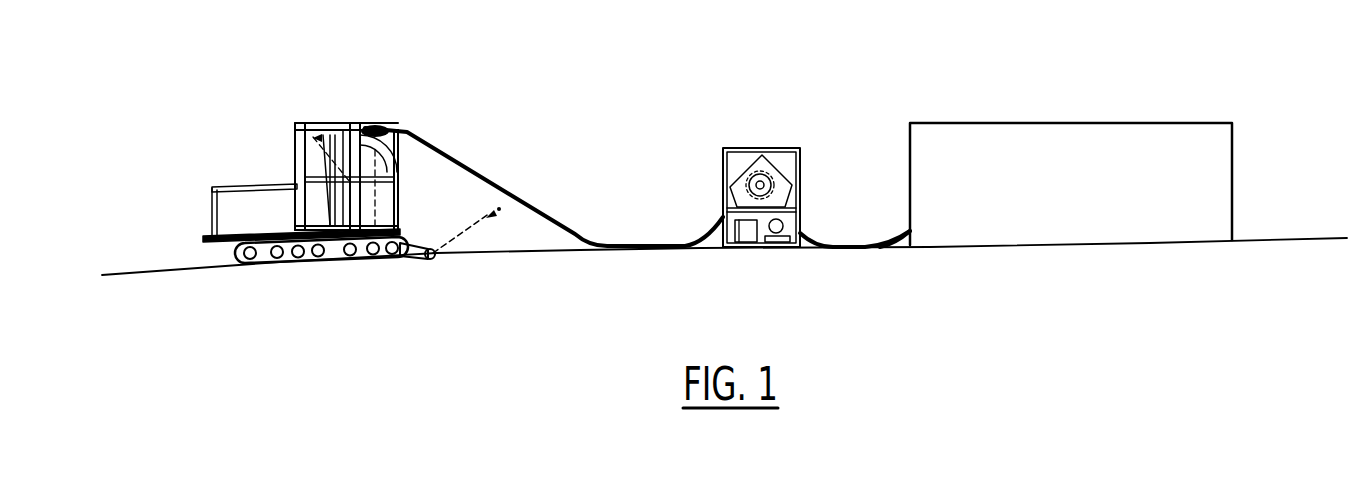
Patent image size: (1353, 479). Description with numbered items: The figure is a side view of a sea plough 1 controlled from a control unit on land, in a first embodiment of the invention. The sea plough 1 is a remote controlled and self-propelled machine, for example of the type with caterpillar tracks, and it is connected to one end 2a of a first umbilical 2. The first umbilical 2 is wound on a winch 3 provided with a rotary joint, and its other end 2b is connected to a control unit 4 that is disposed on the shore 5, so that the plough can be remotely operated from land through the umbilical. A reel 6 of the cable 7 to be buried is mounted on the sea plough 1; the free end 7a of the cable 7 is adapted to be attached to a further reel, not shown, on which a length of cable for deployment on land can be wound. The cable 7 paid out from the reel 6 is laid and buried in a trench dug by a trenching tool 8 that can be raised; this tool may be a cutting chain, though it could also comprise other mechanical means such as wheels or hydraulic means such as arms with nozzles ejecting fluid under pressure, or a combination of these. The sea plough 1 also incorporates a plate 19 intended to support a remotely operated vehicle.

The sea plough 1 is at (361, 181).
The first umbilical 2 is at (470, 165).
The end of first umbilical 2a is at (388, 128).
The other end of umbilical 2b is at (898, 245).
The winch 3 is at (747, 148).
The control unit 4 is at (1124, 140).
The shore 5 is at (1287, 238).
The reel 6 is at (310, 130).
The cable 7 is at (470, 233).
The free end of cable 7a is at (497, 206).
The trenching tool 8 is at (430, 258).
The plate 19 is at (305, 122).